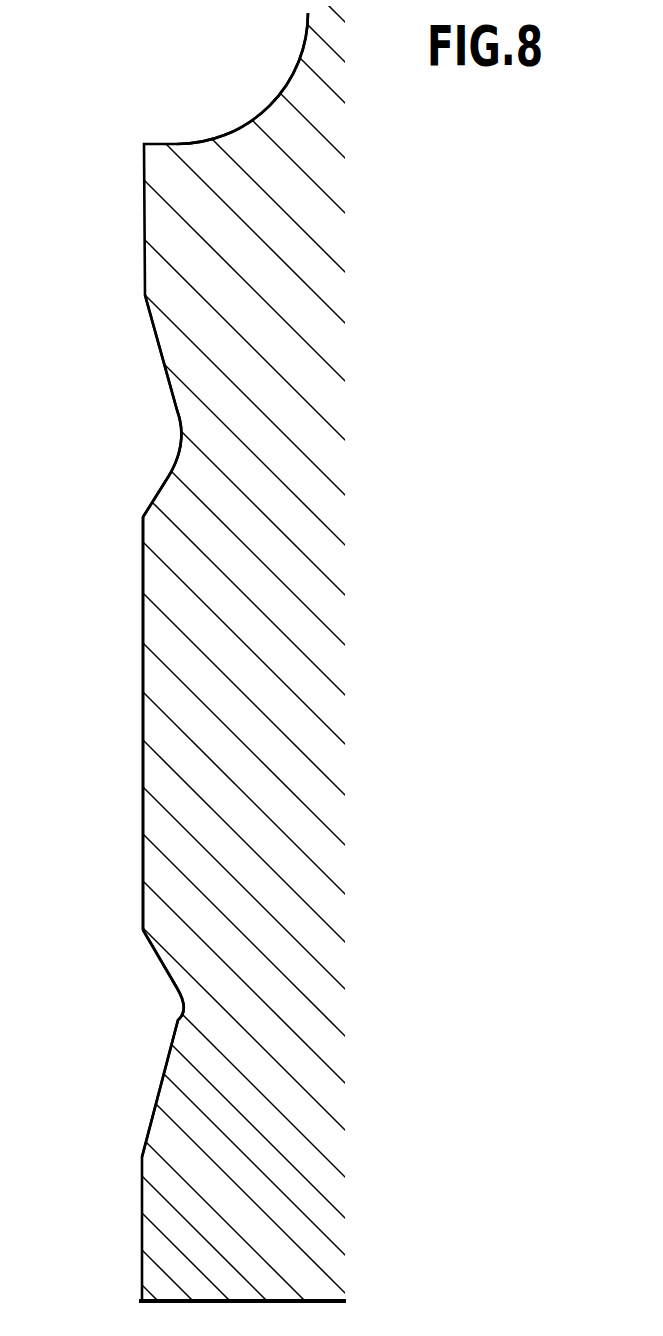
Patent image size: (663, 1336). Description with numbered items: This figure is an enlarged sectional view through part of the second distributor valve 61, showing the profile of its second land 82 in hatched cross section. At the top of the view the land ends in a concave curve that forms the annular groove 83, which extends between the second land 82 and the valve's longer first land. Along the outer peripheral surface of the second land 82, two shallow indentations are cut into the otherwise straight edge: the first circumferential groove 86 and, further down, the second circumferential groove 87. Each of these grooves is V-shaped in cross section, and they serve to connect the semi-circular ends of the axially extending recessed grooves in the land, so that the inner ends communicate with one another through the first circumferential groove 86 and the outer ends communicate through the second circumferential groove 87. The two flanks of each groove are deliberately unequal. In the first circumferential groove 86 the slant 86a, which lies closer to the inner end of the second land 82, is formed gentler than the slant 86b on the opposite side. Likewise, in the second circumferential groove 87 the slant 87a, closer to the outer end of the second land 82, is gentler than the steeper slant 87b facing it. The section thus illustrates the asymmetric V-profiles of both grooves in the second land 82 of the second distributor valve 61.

The second distributor valve 61 is at (143, 597).
The second land 82 is at (143, 748).
The annular groove 83 is at (302, 36).
The first circumferential groove 86 is at (178, 411).
The slant 86a is at (157, 350).
The slant 86b is at (160, 482).
The second circumferential groove 87 is at (179, 1005).
The slant 87a is at (155, 1095).
The slant 87b is at (152, 950).